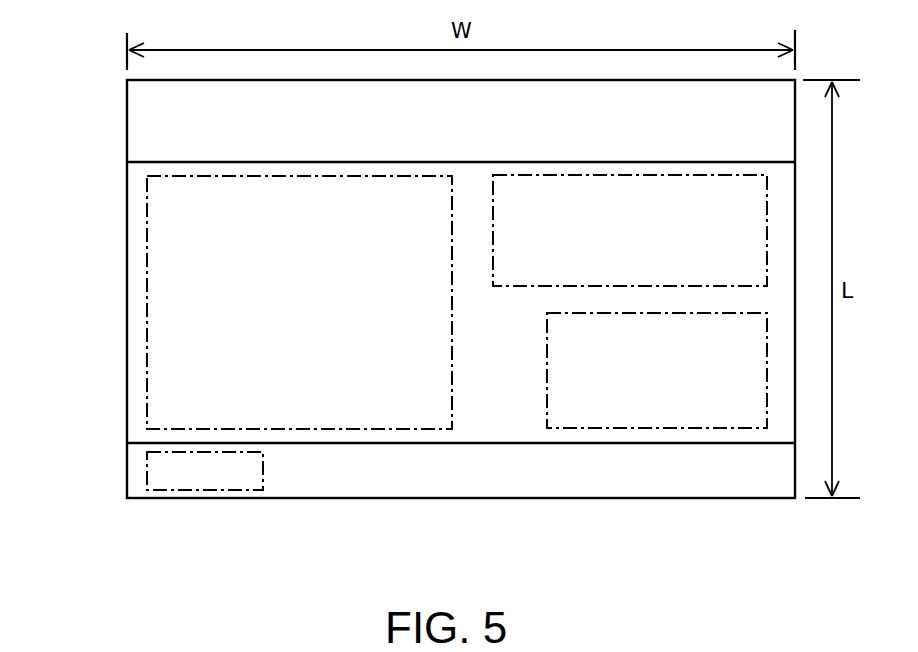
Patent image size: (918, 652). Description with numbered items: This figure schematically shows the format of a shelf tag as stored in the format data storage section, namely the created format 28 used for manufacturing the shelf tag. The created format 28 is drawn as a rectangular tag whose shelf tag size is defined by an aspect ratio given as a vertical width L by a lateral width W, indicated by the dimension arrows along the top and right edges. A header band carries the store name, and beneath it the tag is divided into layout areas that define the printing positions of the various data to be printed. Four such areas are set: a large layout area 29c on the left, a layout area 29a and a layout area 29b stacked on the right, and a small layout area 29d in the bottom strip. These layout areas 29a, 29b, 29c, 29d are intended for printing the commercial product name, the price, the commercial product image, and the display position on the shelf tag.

The created format 28 is at (136, 506).
The layout area 29a is at (520, 286).
The layout area 29b is at (659, 428).
The layout area 29c is at (146, 302).
The layout area 29d is at (263, 470).